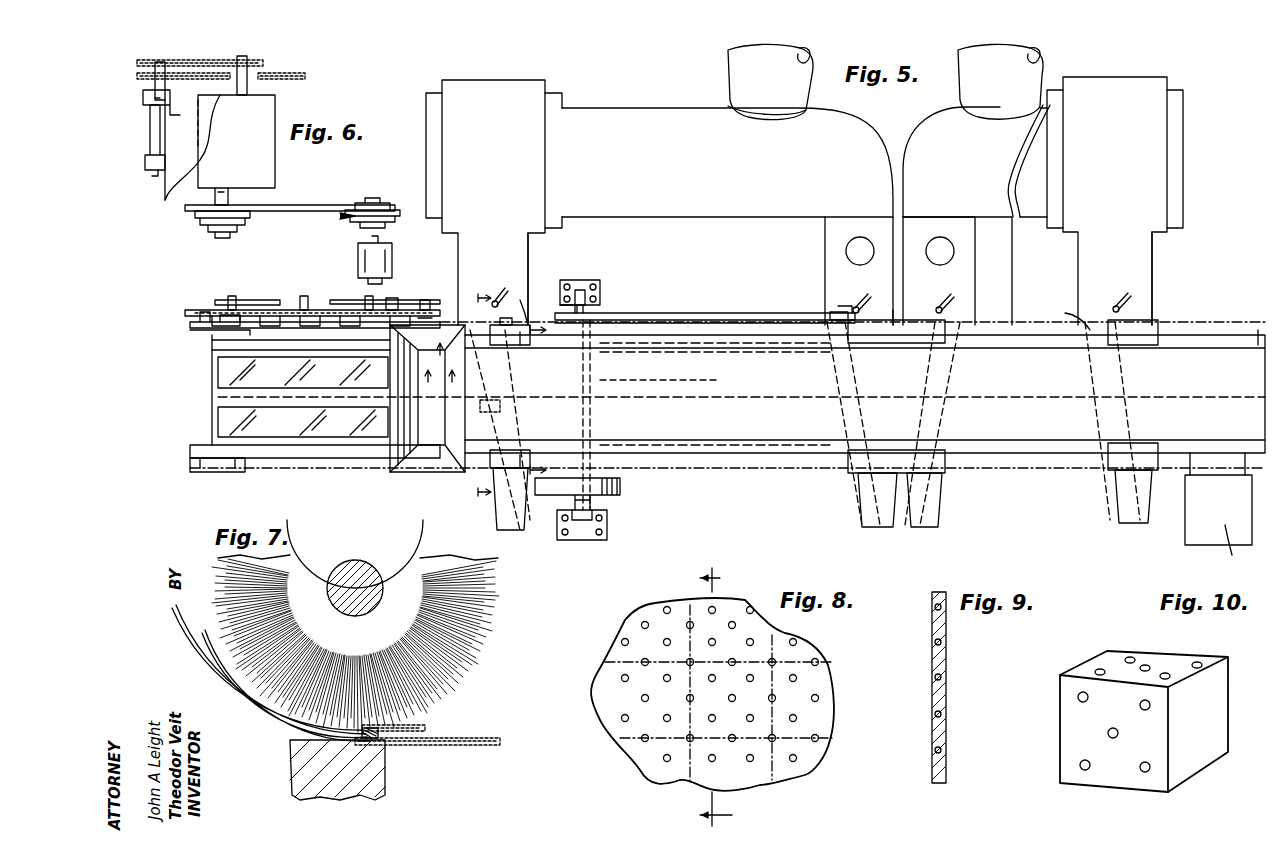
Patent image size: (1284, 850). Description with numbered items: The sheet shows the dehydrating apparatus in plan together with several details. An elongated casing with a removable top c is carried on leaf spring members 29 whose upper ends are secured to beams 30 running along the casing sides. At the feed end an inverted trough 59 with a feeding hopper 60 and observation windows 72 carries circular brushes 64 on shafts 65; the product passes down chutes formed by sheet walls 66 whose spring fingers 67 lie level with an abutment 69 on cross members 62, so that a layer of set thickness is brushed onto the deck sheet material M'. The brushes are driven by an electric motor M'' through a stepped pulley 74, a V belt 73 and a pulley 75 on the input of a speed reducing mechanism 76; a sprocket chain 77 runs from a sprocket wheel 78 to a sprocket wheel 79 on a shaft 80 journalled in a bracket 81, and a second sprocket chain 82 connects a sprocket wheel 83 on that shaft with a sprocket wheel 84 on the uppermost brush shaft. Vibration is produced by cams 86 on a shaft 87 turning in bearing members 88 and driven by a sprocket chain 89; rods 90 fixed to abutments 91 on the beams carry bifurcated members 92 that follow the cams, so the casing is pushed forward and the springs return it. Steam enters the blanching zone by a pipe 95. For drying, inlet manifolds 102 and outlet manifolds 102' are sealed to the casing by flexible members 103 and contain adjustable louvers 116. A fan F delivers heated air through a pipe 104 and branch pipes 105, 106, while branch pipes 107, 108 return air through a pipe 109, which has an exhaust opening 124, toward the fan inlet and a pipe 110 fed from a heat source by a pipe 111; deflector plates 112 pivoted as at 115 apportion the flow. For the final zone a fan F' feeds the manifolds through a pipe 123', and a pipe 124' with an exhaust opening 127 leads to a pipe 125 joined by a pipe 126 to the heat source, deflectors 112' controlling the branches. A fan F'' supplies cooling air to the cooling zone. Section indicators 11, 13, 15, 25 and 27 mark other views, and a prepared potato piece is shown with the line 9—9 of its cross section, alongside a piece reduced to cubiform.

In FIG. 5, the pipe 110 is at (620, 115).
In FIG. 5, the pipe 111 is at (738, 90).
In FIG. 5, the pipe 126 is at (1012, 80).
In FIG. 5, the pipe 125 is at (976, 215).
In FIG. 5, the fan F is at (494, 202).
In FIG. 5, the fan F' is at (1115, 201).
In FIG. 5, the fan F'' is at (1220, 512).
In FIG. 5, the pipe 123' is at (1162, 278).
In FIG. 5, the pipe 104 is at (512, 240).
In FIG. 5, the opening 124 is at (821, 251).
In FIG. 5, the pipe 124' is at (968, 246).
In FIG. 5, the opening 127 is at (955, 253).
In FIG. 5, the outlet pipe 109 is at (833, 273).
In FIG. 5, the beams 30 is at (318, 345).
In FIG. 5, the leaf spring members 29 is at (215, 335).
In FIG. 5, the window 72 is at (303, 397).
In FIG. 5, the trough like member 59 is at (220, 397).
In FIG. 5, the feeding hopper 60 is at (426, 462).
In FIG. 5, the section line 11 is at (440, 368).
In FIG. 5, the section line 13 is at (448, 351).
In FIG. 5, the sprocket wheel 83 is at (190, 311).
In FIG. 5, the sprocket chain 77 is at (245, 300).
In FIG. 6, the sprocket chain 77 is at (192, 66).
In FIG. 5, the sprocket wheel 78 is at (302, 298).
In FIG. 6, the sprocket wheel 78 is at (260, 58).
In FIG. 5, the sprocket wheel 79 is at (215, 308).
In FIG. 6, the sprocket wheel 79 is at (137, 64).
In FIG. 5, the shaft 80 is at (232, 296).
In FIG. 6, the shaft 80 is at (150, 124).
In FIG. 6, the bracket 81 is at (142, 96).
In FIG. 5, the sprocket chain 82 is at (345, 308).
In FIG. 6, the sprocket chain 82 is at (262, 76).
In FIG. 5, the sprocket wheel 84 is at (425, 306).
In FIG. 5, the shafts 65 is at (392, 305).
In FIG. 7, the shafts 65 is at (370, 562).
In FIG. 5, the section line 25 is at (727, 397).
In FIG. 5, the section line 27 is at (530, 400).
In FIG. 5, the manifolds 102 is at (837, 411).
In FIG. 5, the manifolds 102' is at (954, 498).
In FIG. 5, the louvers 116 is at (935, 344).
In FIG. 5, the abutments 91 is at (826, 346).
In FIG. 5, the branch pipe 108 is at (848, 420).
In FIG. 5, the branch pipe 106 is at (1096, 420).
In FIG. 5, the pipe 95 is at (498, 410).
In FIG. 5, the flexible member 103 is at (528, 348).
In FIG. 5, the bifurcated member 92 is at (589, 350).
In FIG. 5, the cams 86 is at (640, 345).
In FIG. 5, the shaft 87 is at (592, 380).
In FIG. 5, the rods 90 is at (733, 346).
In FIG. 5, the removable top c is at (688, 440).
In FIG. 5, the section line 15 is at (1258, 362).
In FIG. 5, the sprocket chain 89 is at (712, 313).
In FIG. 5, the bearing members 88 is at (600, 280).
In FIG. 5, the pivot of deflector plates 115 is at (504, 308).
In FIG. 5, the deflector plates 112 is at (760, 281).
In FIG. 5, the deflectors 112' is at (1155, 292).
In FIG. 5, the branch pipe 105 is at (530, 300).
In FIG. 5, the branch pipe 107 is at (887, 312).
In FIG. 6, the speed reducing mechanism 76 is at (250, 165).
In FIG. 6, the V belt 73 is at (305, 211).
In FIG. 6, the pulley 75 is at (228, 234).
In FIG. 6, the pulley 74 is at (395, 228).
In FIG. 6, the electric motor M'' is at (361, 260).
In FIG. 7, the circular brushes 64 is at (238, 596).
In FIG. 7, the sheet material walls 66 is at (200, 656).
In FIG. 7, the cross members 62 is at (372, 766).
In FIG. 7, the spring fingers 67 is at (300, 728).
In FIG. 7, the abutment 69 is at (420, 732).
In FIG. 7, the deck sheet material M' is at (427, 719).
In FIG. 8, the section line 9 is at (704, 697).